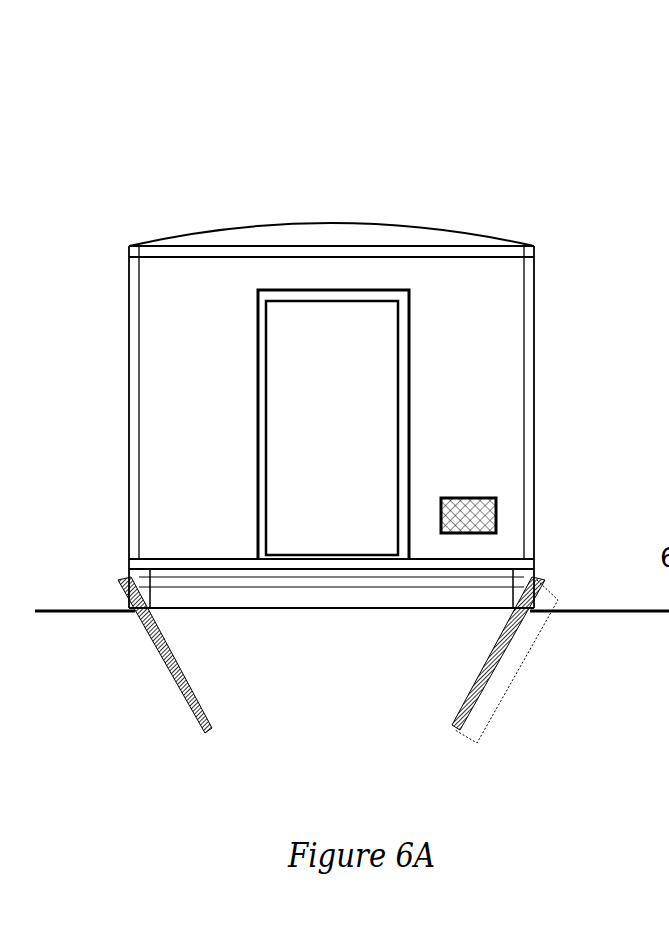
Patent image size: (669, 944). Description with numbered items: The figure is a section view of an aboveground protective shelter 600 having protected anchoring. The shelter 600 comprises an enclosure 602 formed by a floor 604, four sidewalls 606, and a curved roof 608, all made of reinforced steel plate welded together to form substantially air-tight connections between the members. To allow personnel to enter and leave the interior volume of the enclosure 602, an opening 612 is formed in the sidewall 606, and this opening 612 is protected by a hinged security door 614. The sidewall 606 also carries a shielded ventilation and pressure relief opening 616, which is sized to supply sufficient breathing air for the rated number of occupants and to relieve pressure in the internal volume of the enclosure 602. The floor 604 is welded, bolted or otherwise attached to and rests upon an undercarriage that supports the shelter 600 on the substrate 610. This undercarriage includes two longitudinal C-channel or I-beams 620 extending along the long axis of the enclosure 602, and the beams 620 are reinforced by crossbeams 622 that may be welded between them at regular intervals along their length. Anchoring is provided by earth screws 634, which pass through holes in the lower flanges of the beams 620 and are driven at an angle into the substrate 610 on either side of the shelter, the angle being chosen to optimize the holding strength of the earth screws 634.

The aboveground protective shelter 600 is at (577, 239).
The enclosure 602 is at (536, 246).
The floor 604 is at (170, 558).
The sidewalls 606 is at (535, 365).
The roof 608 is at (378, 225).
The substrate 610 is at (75, 610).
The opening 612 is at (412, 400).
The hinged security door 614 is at (395, 475).
The shielded ventilation and pressure relief opening 616 is at (455, 498).
The longitudinal beams 620 is at (150, 595).
The crossbeams 622 is at (370, 593).
The earth screw 634 is at (160, 655).